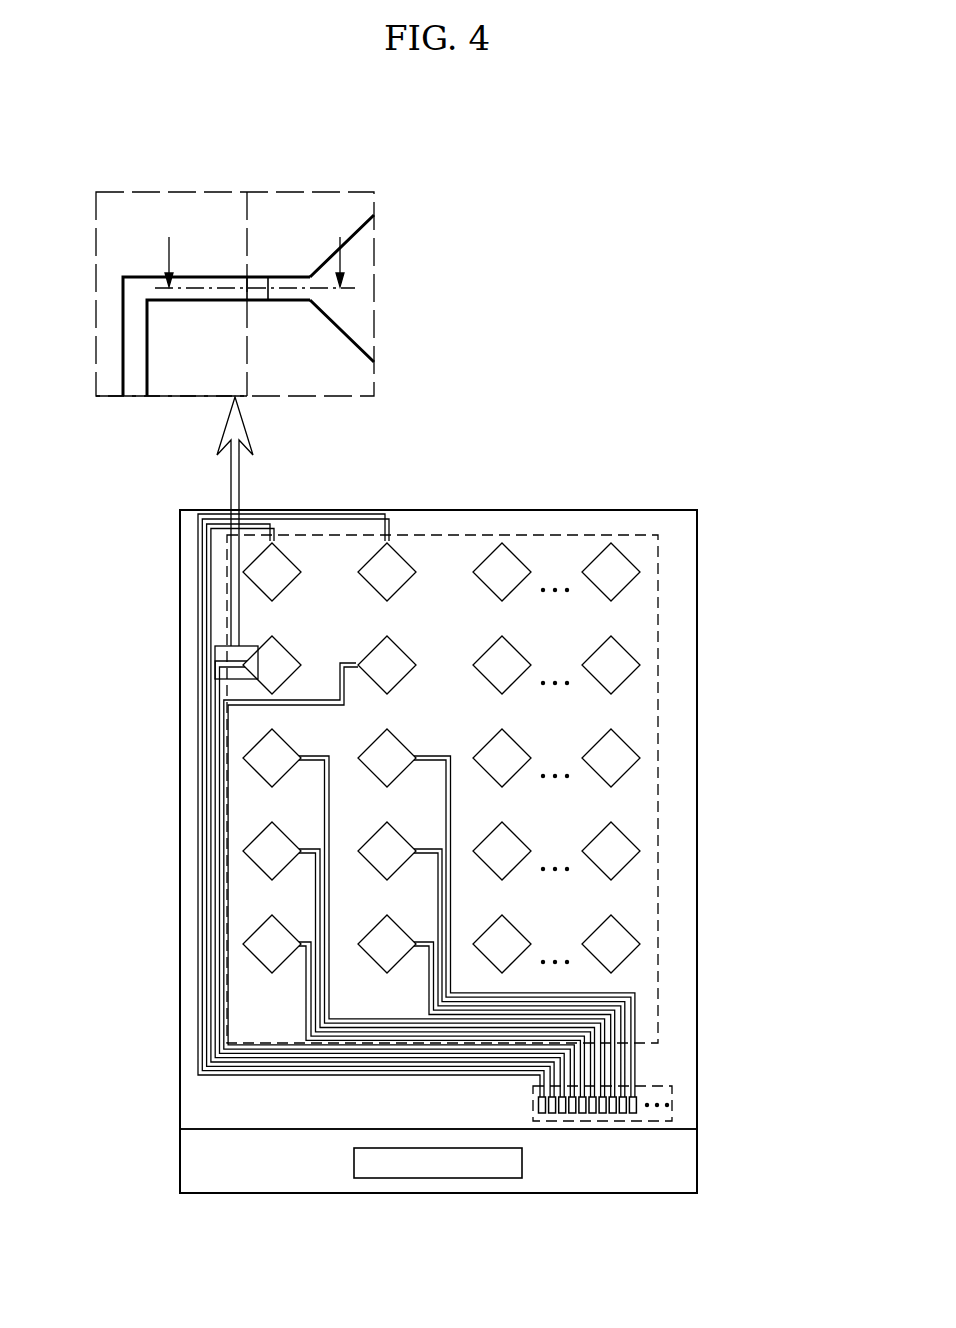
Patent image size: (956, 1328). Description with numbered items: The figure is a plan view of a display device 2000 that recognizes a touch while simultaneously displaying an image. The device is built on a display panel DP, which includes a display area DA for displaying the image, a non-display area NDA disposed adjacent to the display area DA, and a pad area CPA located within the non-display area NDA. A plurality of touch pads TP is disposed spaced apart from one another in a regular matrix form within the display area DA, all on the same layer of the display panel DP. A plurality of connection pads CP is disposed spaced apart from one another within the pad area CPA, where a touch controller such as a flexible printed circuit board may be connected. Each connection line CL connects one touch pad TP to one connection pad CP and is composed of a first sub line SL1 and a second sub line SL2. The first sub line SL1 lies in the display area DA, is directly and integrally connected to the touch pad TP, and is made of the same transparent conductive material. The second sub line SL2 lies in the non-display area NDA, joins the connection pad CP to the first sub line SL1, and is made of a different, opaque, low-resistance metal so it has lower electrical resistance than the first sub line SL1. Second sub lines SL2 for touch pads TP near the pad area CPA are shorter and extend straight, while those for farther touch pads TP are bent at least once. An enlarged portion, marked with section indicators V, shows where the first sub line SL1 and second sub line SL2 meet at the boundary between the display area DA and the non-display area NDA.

The display device 2000 is at (458, 159).
The non-display area NDA is at (250, 1102).
The display area DA is at (658, 657).
The cross-section line V is at (254, 248).
The touch pad TP is at (493, 558).
The first sub line SL1 is at (292, 297).
The second sub line SL2 is at (203, 297).
The connection line CL is at (433, 687).
The display panel DP is at (697, 850).
The pad area CPA is at (673, 1095).
The connection pad CP is at (541, 1113).